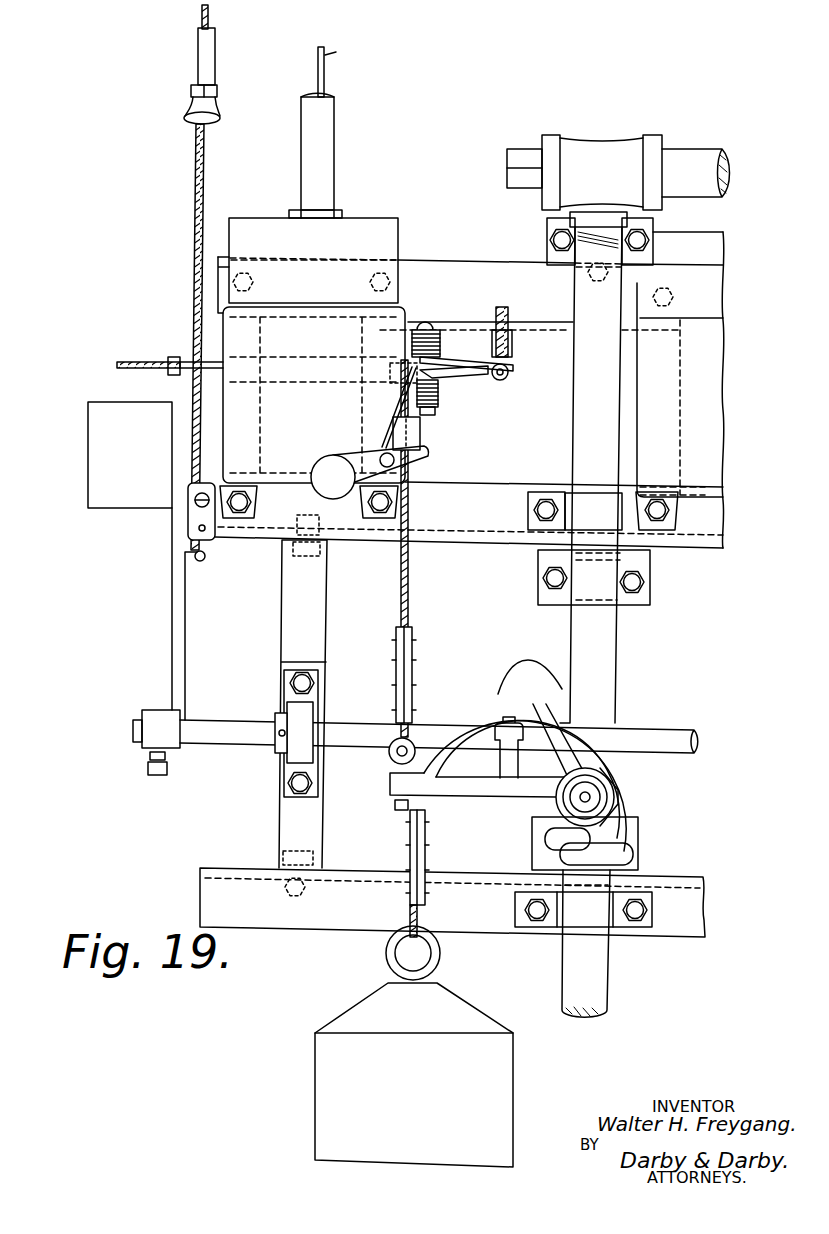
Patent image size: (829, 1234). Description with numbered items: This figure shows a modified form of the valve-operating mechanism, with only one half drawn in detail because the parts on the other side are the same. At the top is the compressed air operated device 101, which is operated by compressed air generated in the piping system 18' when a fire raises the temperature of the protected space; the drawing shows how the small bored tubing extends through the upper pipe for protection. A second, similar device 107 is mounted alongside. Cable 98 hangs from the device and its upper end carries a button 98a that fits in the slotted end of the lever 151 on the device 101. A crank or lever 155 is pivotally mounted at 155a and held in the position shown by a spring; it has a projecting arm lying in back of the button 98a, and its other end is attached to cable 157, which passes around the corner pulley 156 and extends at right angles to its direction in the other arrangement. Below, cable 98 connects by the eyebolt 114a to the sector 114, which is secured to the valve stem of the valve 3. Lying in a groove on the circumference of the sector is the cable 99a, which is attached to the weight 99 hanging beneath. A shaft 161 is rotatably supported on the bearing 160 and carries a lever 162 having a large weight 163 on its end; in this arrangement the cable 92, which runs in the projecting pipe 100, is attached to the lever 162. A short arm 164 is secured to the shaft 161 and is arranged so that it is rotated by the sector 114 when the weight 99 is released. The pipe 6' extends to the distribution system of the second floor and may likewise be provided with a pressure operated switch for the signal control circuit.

The projecting pipe 100 is at (215, 58).
The cable 92 is at (205, 170).
The piping system 18' is at (353, 131).
The pipe 6' is at (636, 563).
The cable 157 is at (135, 360).
The compressed air operated device 101 is at (314, 376).
The pivot 155a is at (442, 332).
The lever 155 is at (458, 368).
The corner pulley 156 is at (487, 383).
The button 98a is at (420, 428).
The lever 151 is at (430, 457).
The compressed air operated device 107 is at (712, 412).
The weight 163 is at (110, 500).
The cable 98 is at (410, 585).
The lever 162 is at (172, 643).
The bearing 160 is at (287, 690).
The shaft 161 is at (228, 735).
The sector 114 is at (488, 693).
The eyebolt 114a is at (390, 758).
The valve 3 is at (608, 762).
The cable 99a is at (423, 803).
The short arm 164 is at (505, 807).
The weight 99 is at (500, 1100).